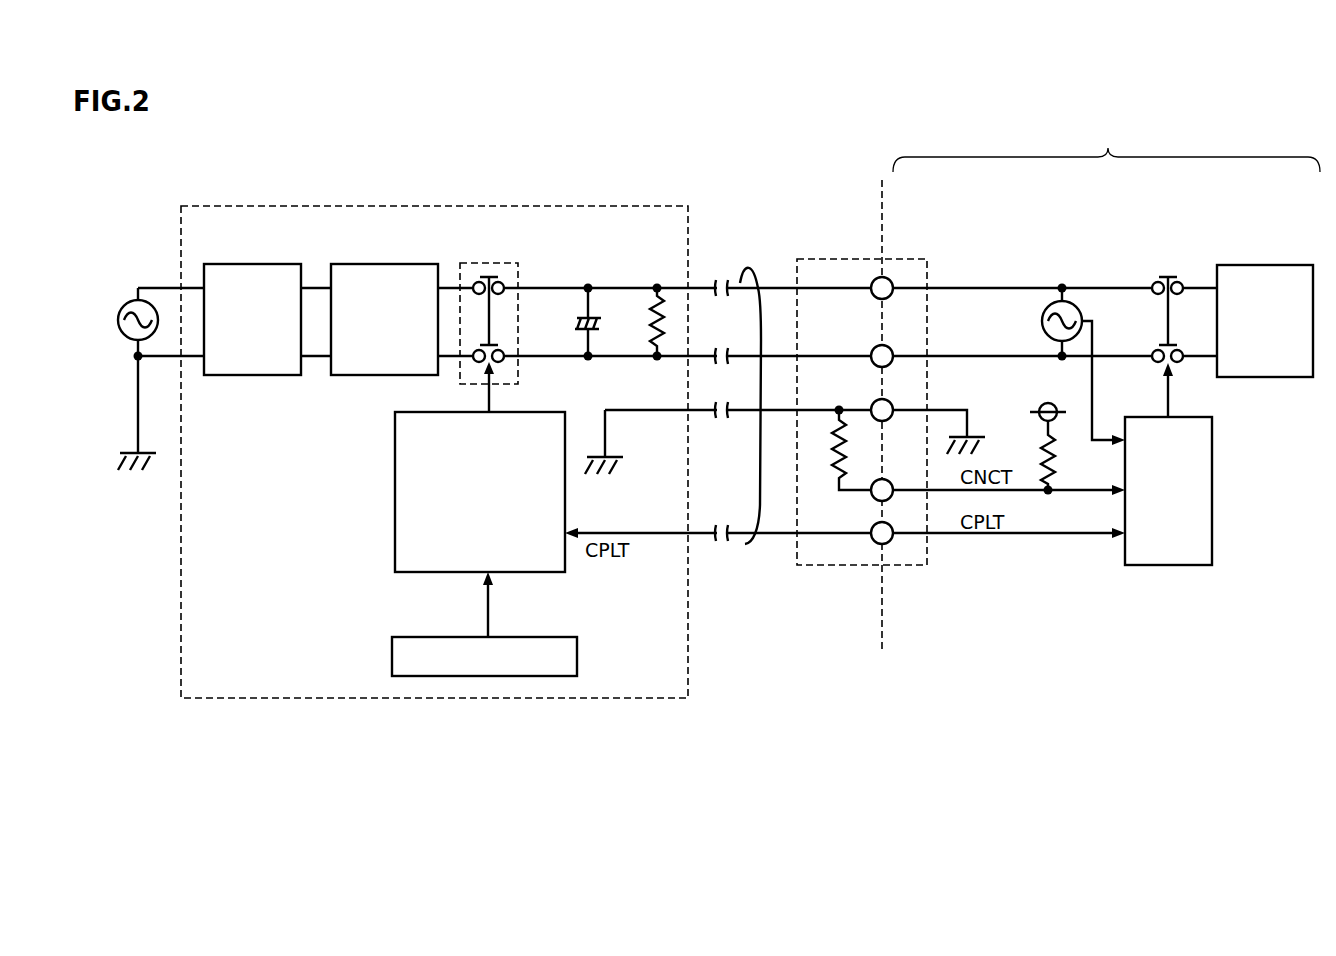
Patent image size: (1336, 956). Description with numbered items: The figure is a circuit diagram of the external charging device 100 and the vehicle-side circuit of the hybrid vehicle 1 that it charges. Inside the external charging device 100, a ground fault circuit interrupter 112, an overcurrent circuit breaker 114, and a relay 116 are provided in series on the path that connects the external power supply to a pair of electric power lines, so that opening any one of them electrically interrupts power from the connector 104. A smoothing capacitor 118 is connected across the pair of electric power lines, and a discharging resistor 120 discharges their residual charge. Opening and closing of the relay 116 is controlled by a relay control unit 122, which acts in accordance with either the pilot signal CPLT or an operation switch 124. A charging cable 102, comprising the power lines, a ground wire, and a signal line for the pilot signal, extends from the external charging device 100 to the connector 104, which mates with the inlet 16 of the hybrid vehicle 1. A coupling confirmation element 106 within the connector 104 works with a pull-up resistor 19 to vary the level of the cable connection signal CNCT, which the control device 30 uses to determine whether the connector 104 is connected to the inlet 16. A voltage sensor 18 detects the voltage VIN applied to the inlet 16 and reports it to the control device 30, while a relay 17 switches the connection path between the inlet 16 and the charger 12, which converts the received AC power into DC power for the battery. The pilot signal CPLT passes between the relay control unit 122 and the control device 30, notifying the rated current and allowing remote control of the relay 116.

The hybrid vehicle 1 is at (1106, 148).
The charger 12 is at (1268, 264).
The inlet 16 is at (906, 258).
The relay 17 is at (1170, 276).
The voltage sensor 18 is at (1042, 321).
The pull-up resistor 19 is at (1054, 455).
The control device 30 is at (1180, 565).
The external charging device 100 is at (553, 206).
The charging cable 102 is at (740, 537).
The connector 104 is at (837, 258).
The coupling confirmation element 106 is at (836, 447).
The ground fault circuit interrupter 112 is at (247, 378).
The overcurrent circuit breaker 114 is at (367, 378).
The relay 116 is at (477, 264).
The smoothing capacitor 118 is at (577, 320).
The discharging resistor 120 is at (650, 314).
The relay control unit 122 is at (395, 500).
The operation switch 124 is at (392, 660).